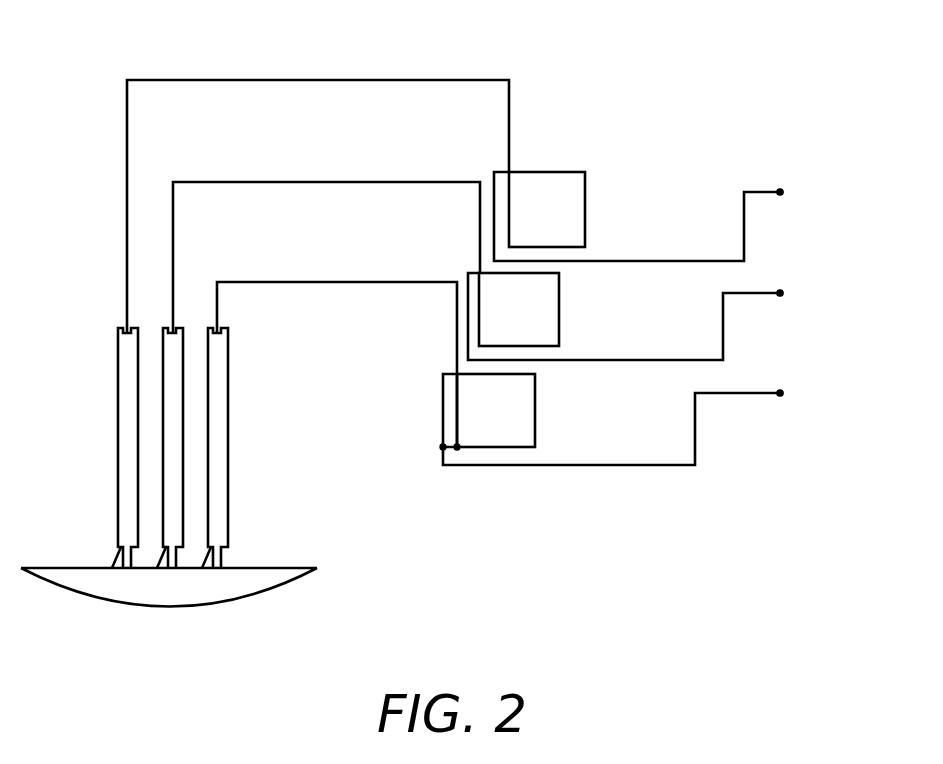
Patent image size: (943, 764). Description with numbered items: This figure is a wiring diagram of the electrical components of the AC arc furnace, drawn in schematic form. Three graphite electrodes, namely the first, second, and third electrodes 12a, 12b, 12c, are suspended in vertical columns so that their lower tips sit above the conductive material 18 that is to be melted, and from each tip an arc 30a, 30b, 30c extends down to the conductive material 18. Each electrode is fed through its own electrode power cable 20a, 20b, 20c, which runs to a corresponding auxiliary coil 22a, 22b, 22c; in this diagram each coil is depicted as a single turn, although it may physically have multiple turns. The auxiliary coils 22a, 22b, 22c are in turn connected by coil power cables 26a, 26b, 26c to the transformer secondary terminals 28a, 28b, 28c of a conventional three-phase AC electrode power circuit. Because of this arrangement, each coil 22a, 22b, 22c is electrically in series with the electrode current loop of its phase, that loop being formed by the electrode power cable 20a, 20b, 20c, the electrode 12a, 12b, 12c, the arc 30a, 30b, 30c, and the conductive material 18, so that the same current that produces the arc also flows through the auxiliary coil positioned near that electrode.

The first electrode 12a is at (178, 330).
The second electrode 12b is at (118, 400).
The third electrode 12c is at (229, 395).
The conductive material 18 is at (265, 588).
The first electrode power cable 20a is at (220, 182).
The second electrode power cable 20b is at (192, 80).
The third electrode power cable 20c is at (267, 282).
The first auxiliary coil 22a is at (559, 307).
The second auxiliary coil 22b is at (585, 187).
The third auxiliary coil 22c is at (535, 427).
The first coil power cable 26a is at (667, 358).
The second coil power cable 26b is at (693, 260).
The third coil power cable 26c is at (612, 465).
The first transformer secondary terminal 28a is at (780, 293).
The second transformer secondary terminal 28b is at (780, 192).
The third transformer secondary terminal 28c is at (780, 393).
The first arc 30a is at (178, 560).
The second arc 30b is at (113, 565).
The third arc 30c is at (222, 558).